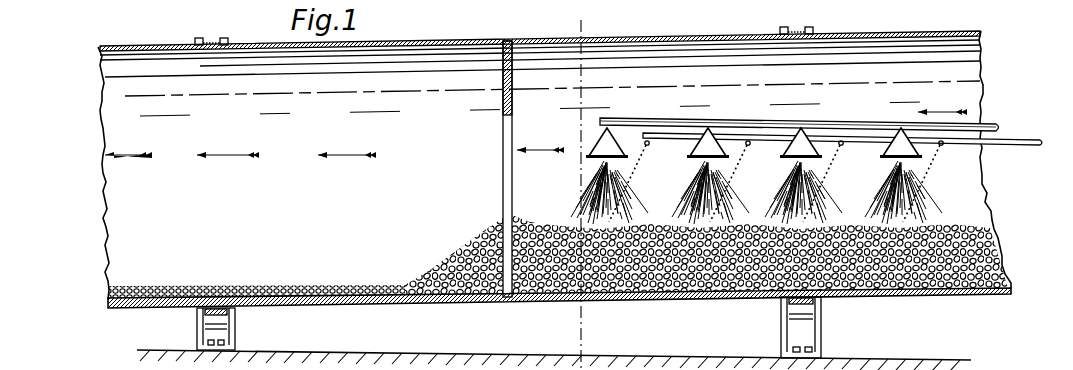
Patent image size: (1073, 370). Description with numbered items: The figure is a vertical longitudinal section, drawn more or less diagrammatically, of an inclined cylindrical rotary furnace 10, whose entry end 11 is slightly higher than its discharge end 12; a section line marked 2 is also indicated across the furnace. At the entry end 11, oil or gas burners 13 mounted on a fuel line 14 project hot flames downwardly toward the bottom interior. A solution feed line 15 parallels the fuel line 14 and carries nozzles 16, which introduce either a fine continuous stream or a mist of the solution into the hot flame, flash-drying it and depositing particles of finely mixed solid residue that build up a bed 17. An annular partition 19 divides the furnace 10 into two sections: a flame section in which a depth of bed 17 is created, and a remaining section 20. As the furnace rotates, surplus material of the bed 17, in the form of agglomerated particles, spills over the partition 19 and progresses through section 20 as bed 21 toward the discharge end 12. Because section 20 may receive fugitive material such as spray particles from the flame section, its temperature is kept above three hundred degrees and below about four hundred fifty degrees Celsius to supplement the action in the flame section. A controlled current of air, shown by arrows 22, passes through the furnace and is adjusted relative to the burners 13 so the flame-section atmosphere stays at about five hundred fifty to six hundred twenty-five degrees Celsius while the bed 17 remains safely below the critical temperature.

The section line 2- 2 is at (572, 18).
The inclined cylindrical rotary furnace 10 is at (644, 37).
The entry end 11 is at (988, 68).
The discharge end 12 is at (94, 194).
The oil or gas burners 13 is at (598, 137).
The fuel line 14 is at (729, 121).
The solution feed line 15 is at (1021, 139).
The nozzles 16 is at (787, 181).
The bed 17 is at (646, 299).
The annular partition 19 is at (503, 100).
The remaining section 20 is at (360, 229).
The bed 21 is at (486, 267).
The arrows 22 is at (228, 151).